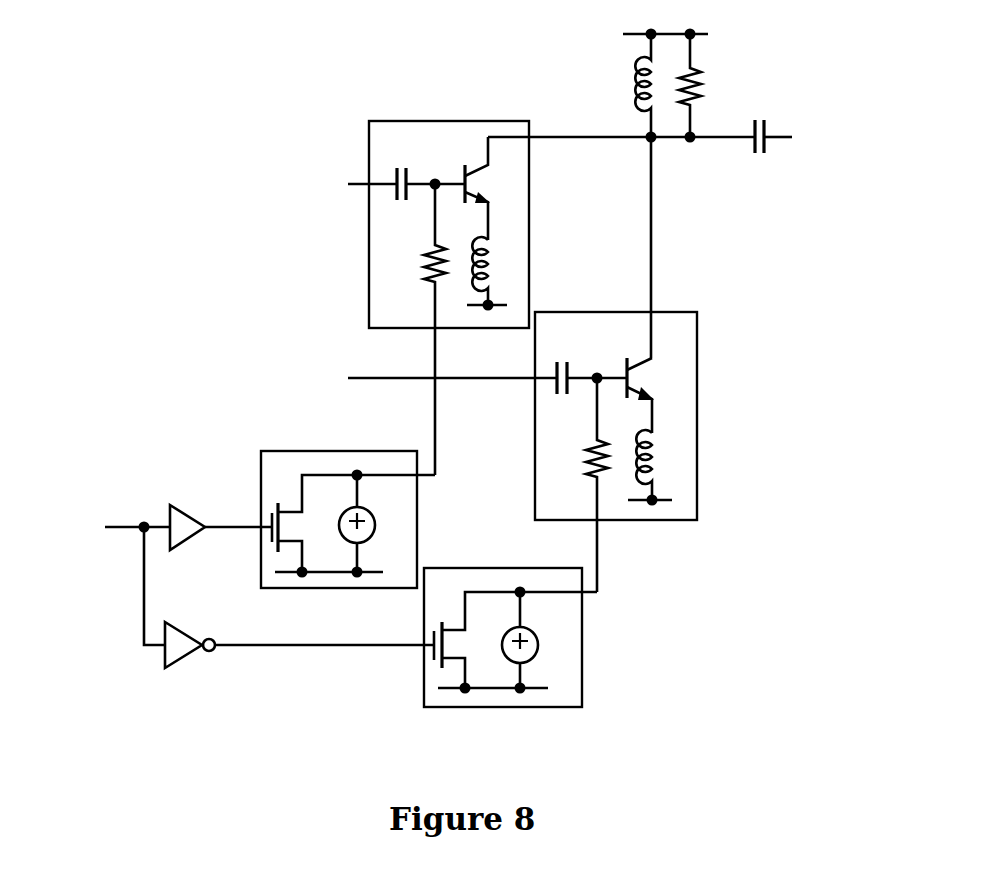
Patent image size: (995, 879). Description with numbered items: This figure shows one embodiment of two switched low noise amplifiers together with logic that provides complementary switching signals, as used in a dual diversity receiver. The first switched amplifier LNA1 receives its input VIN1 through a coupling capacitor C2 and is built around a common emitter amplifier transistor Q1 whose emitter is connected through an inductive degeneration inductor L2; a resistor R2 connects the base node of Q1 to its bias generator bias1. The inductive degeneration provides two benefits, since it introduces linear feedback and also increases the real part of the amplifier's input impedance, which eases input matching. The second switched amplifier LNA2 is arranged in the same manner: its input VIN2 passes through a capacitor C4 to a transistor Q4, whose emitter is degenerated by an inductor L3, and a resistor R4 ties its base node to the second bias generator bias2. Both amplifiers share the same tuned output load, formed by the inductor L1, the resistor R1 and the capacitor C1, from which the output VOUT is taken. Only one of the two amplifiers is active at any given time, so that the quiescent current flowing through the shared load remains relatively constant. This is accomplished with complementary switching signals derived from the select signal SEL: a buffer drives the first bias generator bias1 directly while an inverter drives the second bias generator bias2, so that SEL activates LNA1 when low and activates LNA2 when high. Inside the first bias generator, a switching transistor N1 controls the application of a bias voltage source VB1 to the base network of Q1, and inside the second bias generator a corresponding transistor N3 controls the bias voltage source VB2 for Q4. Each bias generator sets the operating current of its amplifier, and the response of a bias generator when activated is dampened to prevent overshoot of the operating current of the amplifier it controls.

The tuned output load inductor L1 is at (624, 85).
The tuned output load resistor R1 is at (709, 85).
The tuned output load capacitor C1 is at (760, 153).
The output voltage VOUT is at (830, 139).
The first switched LNA LNA1 is at (449, 208).
The first input voltage VIN1 is at (348, 186).
The first input coupling capacitor C2 is at (431, 169).
The common emitter amplifier transistor Q1 is at (492, 188).
The inductive degeneration inductor L2 is at (494, 274).
The first bias resistor R2 is at (415, 329).
The second switched LNA LNA2 is at (621, 437).
The second input voltage VIN2 is at (428, 380).
The second input coupling capacitor C4 is at (592, 362).
The second bipolar transistor Q4 is at (654, 395).
The second emitter degeneration inductor L3 is at (655, 467).
The second bias resistor R4 is at (577, 485).
The select signal SEL is at (108, 527).
The bias generator bias1 is at (325, 535).
The first NMOS switch transistor N1 is at (353, 526).
The first bias voltage source VB1 is at (373, 524).
The bias generator bias2 is at (598, 637).
The second NMOS switch transistor N3 is at (515, 643).
The second bias voltage source VB2 is at (537, 640).